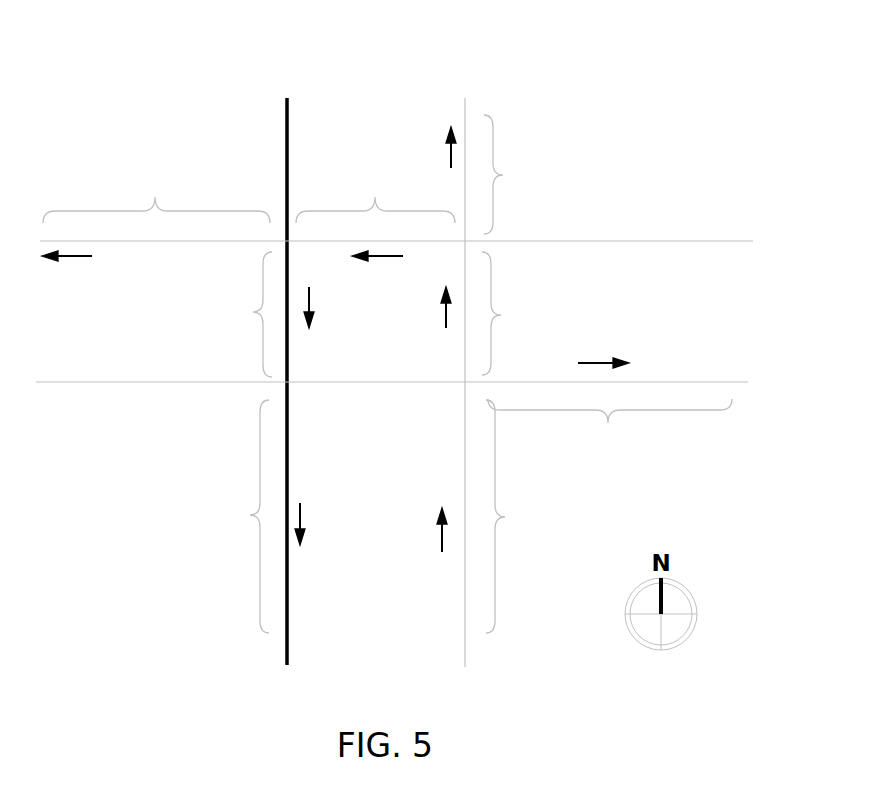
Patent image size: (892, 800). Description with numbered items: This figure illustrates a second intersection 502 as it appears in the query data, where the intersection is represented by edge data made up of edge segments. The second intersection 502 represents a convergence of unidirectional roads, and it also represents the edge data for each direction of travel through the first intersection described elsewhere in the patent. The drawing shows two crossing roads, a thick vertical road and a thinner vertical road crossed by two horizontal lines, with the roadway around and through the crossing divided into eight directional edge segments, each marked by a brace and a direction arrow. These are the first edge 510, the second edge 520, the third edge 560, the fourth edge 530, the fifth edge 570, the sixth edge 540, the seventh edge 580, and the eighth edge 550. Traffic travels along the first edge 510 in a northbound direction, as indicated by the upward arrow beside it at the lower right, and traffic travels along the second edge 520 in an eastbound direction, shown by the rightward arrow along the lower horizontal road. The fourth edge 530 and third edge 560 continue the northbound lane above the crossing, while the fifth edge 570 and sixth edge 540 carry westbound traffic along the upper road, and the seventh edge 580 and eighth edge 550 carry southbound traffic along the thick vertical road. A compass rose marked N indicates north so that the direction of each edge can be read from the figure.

The second intersection 502 is at (217, 70).
The first edge 510 is at (497, 516).
The second edge 520 is at (610, 413).
The fourth edge 530 is at (502, 174).
The sixth edge 540 is at (156, 206).
The eighth edge 550 is at (251, 516).
The third edge 560 is at (495, 313).
The fifth edge 570 is at (375, 210).
The seventh edge 580 is at (257, 314).